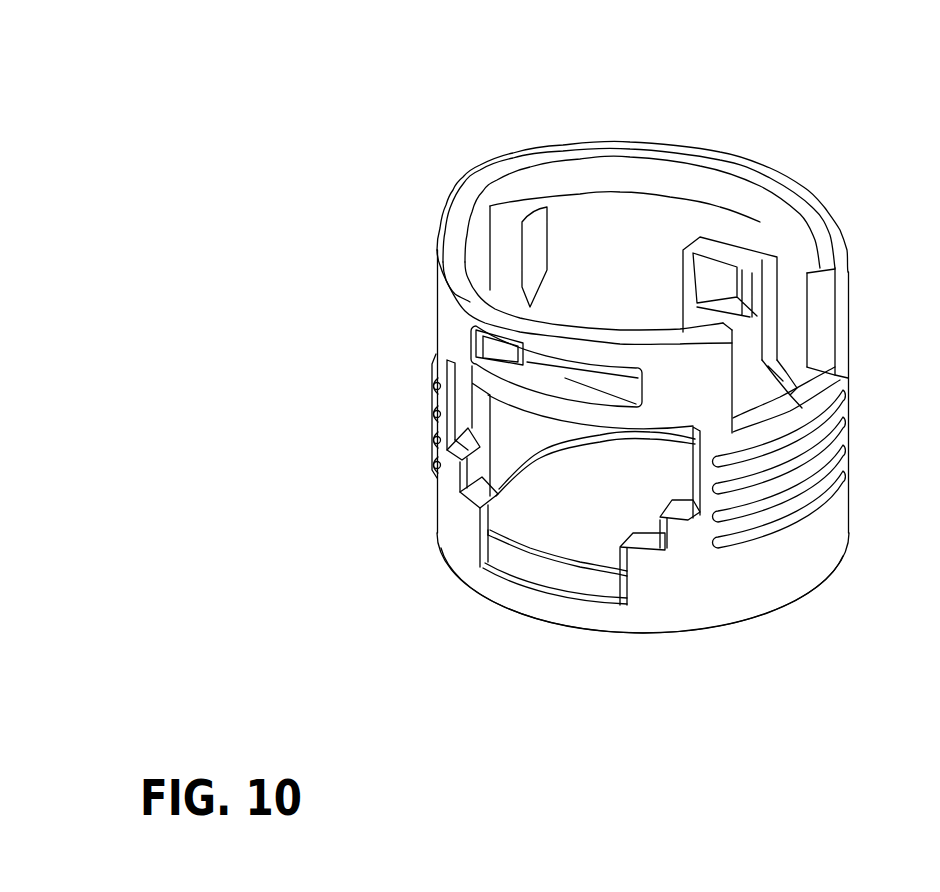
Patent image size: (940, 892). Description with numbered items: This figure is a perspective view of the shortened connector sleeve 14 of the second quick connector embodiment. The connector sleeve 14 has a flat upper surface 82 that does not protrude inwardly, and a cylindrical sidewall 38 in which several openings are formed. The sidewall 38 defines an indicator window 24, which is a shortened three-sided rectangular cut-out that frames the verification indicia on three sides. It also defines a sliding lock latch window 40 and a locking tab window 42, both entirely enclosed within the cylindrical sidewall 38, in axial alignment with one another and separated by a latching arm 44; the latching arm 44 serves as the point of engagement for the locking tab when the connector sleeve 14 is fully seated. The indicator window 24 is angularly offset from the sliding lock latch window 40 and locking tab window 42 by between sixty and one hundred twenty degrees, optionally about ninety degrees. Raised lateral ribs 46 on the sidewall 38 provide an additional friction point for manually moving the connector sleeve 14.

The connector sleeve 14 is at (455, 128).
The flat upper surface 82 is at (737, 157).
The latching arm 44 is at (557, 384).
The locking tab window 42 is at (530, 400).
The indicator window 24 is at (835, 313).
The lateral ribs 46 is at (835, 447).
The sliding lock latch window 40 is at (542, 591).
The cylindrical sidewall 38 is at (662, 585).